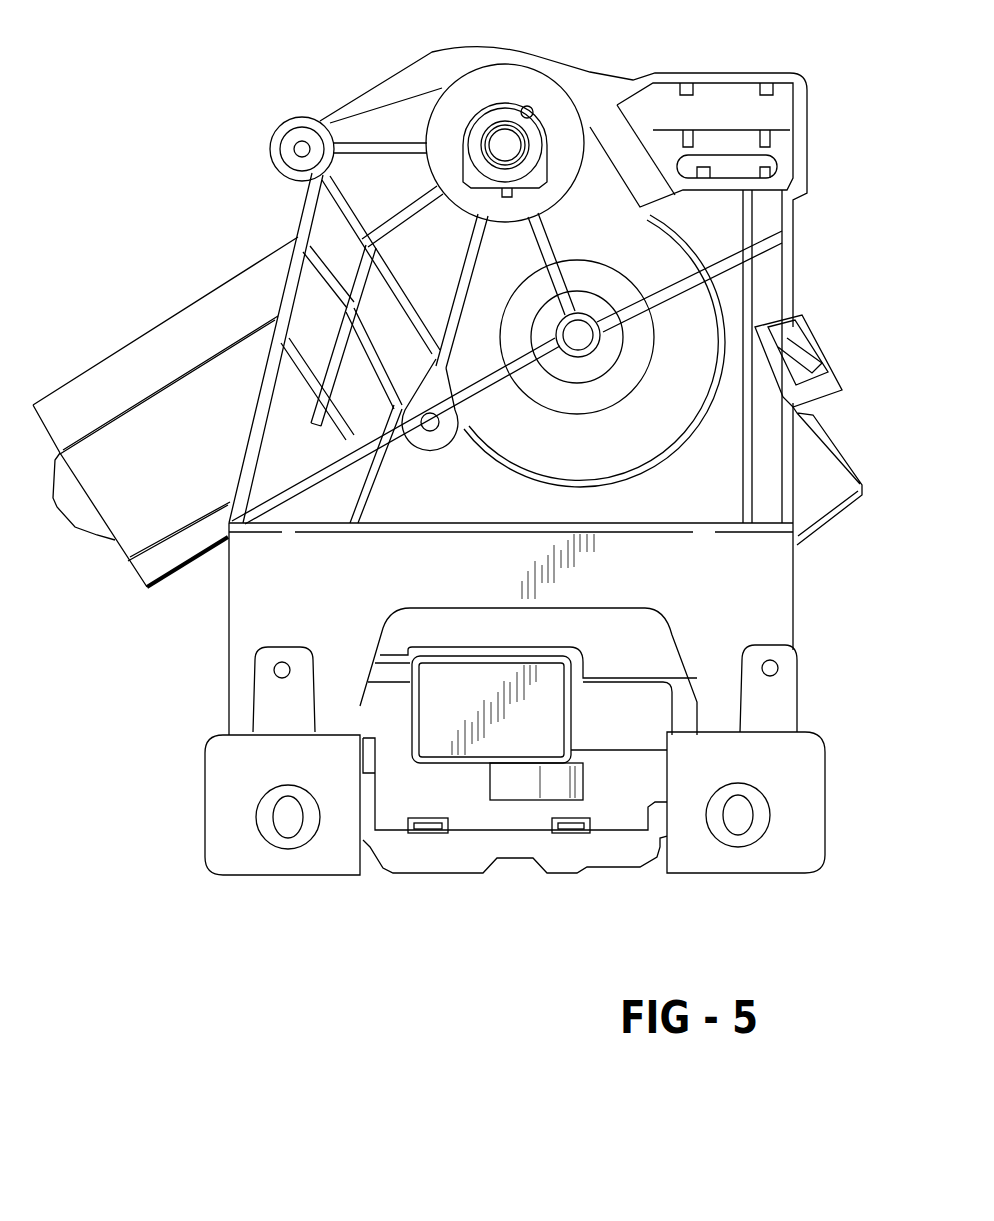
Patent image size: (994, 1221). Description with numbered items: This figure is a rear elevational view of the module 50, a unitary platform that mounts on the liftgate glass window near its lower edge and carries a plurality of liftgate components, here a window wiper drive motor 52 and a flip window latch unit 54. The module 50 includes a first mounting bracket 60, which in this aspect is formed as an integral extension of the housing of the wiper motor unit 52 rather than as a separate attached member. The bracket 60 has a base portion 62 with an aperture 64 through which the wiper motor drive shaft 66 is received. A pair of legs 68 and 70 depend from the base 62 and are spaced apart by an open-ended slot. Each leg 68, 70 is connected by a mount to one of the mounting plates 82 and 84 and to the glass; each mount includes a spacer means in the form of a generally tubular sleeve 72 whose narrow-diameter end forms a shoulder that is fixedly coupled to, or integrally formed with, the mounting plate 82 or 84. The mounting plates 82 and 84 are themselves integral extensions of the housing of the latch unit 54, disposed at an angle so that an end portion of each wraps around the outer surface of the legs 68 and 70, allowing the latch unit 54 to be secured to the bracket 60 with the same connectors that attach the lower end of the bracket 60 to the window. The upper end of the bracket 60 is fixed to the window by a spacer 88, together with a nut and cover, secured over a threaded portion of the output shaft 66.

The module 50 is at (258, 160).
The wiper drive motor 52 is at (174, 350).
The flip window latch unit 54 is at (477, 820).
The first mounting bracket 60 is at (733, 305).
The base portion 62 is at (613, 393).
The aperture 64 is at (533, 117).
The wiper motor drive shaft 66 is at (501, 134).
The leg 68 is at (778, 625).
The leg 70 is at (247, 607).
The sleeve 72 is at (285, 843).
The mounting plate 82 is at (803, 755).
The mounting plate 84 is at (218, 832).
The spacer 88 is at (463, 140).